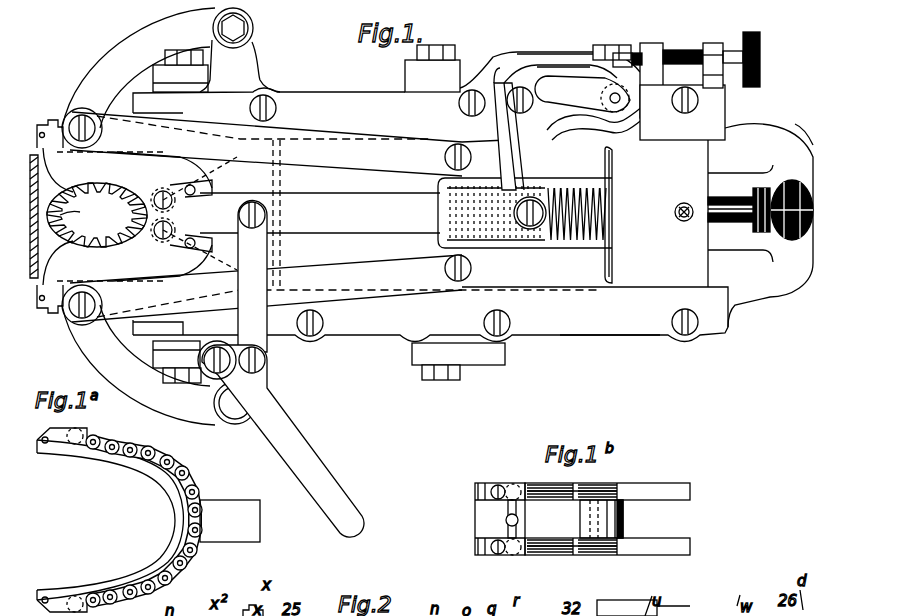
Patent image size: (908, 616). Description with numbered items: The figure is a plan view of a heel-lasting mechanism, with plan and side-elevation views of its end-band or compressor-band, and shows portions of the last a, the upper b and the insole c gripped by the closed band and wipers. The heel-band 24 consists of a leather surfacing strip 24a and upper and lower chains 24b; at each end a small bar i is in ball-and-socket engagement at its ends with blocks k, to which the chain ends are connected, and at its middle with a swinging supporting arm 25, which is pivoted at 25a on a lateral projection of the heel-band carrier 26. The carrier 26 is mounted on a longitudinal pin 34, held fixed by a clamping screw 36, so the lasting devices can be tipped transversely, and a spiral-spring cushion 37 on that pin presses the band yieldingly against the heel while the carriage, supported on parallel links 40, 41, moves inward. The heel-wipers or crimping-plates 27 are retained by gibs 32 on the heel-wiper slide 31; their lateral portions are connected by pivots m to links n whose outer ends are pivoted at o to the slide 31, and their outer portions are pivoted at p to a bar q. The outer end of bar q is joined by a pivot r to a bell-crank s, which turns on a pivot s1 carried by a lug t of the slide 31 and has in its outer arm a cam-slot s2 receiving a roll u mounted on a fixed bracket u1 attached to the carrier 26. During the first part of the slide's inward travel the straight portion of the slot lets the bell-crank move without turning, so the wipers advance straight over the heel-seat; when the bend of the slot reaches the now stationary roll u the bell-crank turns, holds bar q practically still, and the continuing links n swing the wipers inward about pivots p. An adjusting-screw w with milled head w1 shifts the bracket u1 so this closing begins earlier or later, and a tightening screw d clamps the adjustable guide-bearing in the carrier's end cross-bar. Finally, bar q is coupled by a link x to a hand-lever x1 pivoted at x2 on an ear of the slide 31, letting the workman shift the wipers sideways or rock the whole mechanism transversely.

In FIG. 1, the swinging supporting arm 25 is at (118, 45).
In FIG. 1, the pivot of supporting arm 25a is at (240, 26).
In FIG. 1, the heel-band carrier 26 is at (263, 56).
In FIG. 1, the parallel link 40 is at (160, 73).
In FIG. 1, the parallel link 41 is at (470, 60).
In FIG. 1, the pivot m is at (68, 122).
In FIG. 1, the heel-wiper or crimping-plate 27 is at (121, 226).
In FIG. 1, the last a is at (97, 215).
In FIG. 1, the upper b is at (97, 215).
In FIG. 1, the insole c is at (74, 209).
In FIG. 1, the pivot p is at (165, 195).
In FIG. 1, the link n is at (297, 128).
In FIG. 1, the pivot o is at (444, 150).
In FIG. 1, the link x is at (262, 247).
In FIG. 1, the hand-lever x1 is at (275, 418).
In FIG. 1, the pivot of hand-lever x2 is at (203, 378).
In FIG. 1, the bar q is at (345, 223).
In FIG. 1, the spiral-spring cushion 37 is at (568, 186).
In FIG. 1, the pivot r is at (514, 213).
In FIG. 1, the bell-crank s is at (498, 157).
In FIG. 1, the pivot of bell-crank s1 is at (524, 110).
In FIG. 1, the cam-slot s2 is at (597, 82).
In FIG. 1, the lug t is at (494, 113).
In FIG. 1, the roll u is at (592, 116).
In FIG. 1, the bracket u1 is at (682, 91).
In FIG. 1, the adjusting-screw w is at (685, 50).
In FIG. 1, the milled head w1 is at (768, 64).
In FIG. 1, the tightening screw d is at (803, 134).
In FIG. 1, the longitudinal pin 34 is at (724, 198).
In FIG. 1, the clamping screw 36 is at (676, 206).
In FIG. 1, the heel-wiper slide 31 is at (556, 280).
In FIG. 1, the gib 32 is at (603, 336).
In FIG. 1A, the heel-band 24 is at (110, 520).
In FIG. 1B, the heel-band 24 is at (607, 519).
In FIG. 1A, the leather surfacing strip 24a is at (183, 520).
In FIG. 1B, the leather surfacing strip 24a is at (478, 520).
In FIG. 1A, the chain 24b is at (191, 567).
In FIG. 1B, the chain 24b is at (595, 485).
In FIG. 1B, the block k is at (499, 484).
In FIG. 1B, the bar i is at (520, 527).